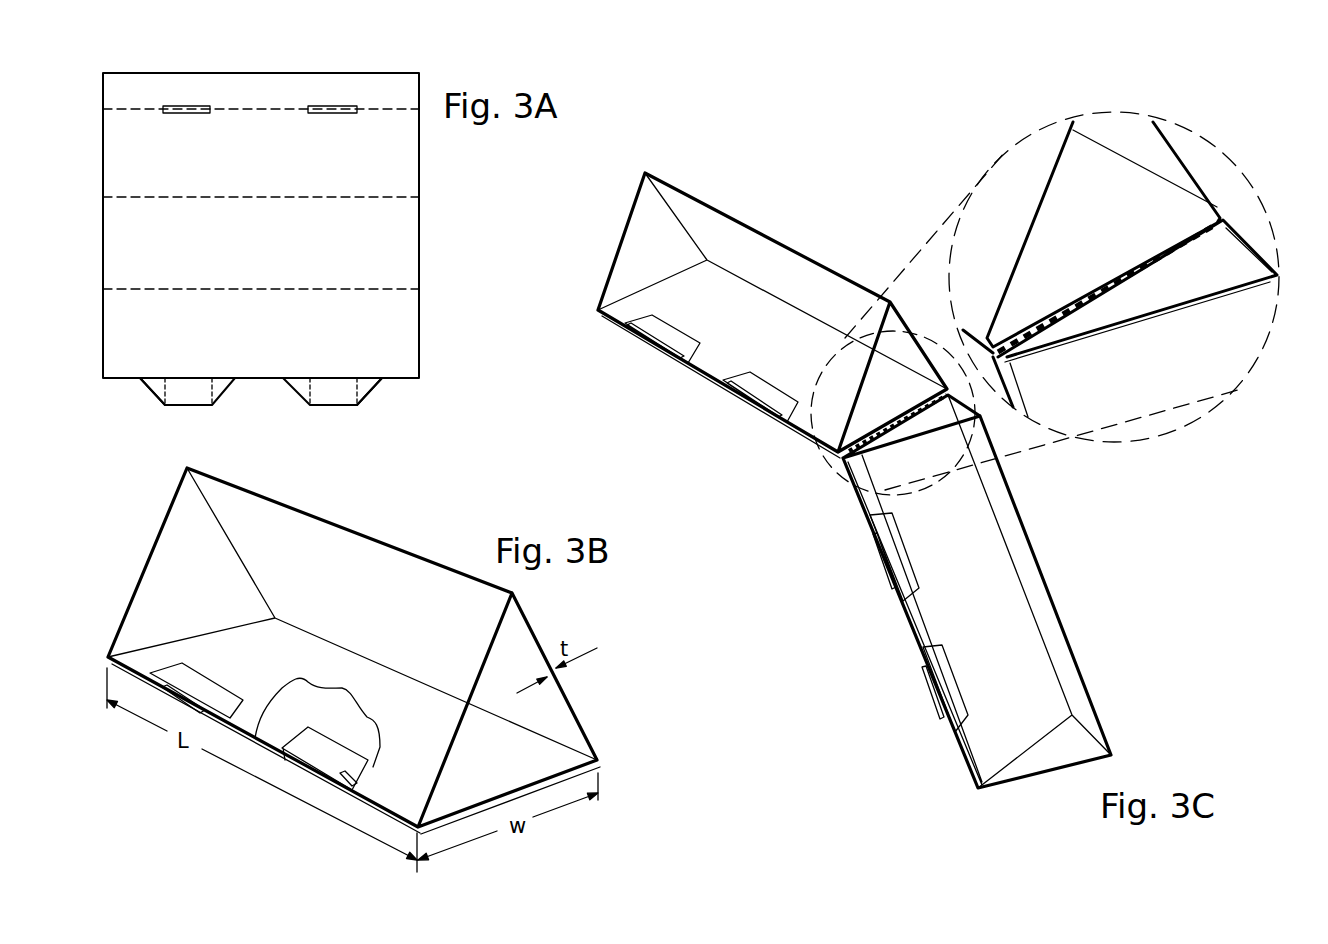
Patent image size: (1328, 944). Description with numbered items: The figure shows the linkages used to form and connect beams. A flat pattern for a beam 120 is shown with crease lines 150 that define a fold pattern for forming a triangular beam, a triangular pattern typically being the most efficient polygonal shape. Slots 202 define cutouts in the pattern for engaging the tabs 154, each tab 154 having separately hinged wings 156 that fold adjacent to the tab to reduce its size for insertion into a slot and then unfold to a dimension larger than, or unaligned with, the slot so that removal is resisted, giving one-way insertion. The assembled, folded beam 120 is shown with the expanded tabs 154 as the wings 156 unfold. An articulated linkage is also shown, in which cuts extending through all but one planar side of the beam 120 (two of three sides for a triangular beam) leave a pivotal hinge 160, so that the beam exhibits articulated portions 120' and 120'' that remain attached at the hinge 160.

In FIG. 3A, the crease lines 150 is at (390, 109).
In FIG. 3A, the slots 202 is at (190, 113).
In FIG. 3A, the tab 154 is at (195, 407).
In FIG. 3B, the tab 154 is at (325, 757).
In FIG. 3A, the hinged wings 156 is at (152, 397).
In FIG. 3B, the hinged wings 156 is at (285, 757).
In FIG. 3B, the beam 120 is at (354, 651).
In FIG. 3C, the beam 120 is at (983, 350).
In FIG. 3C, the articulated portion 120' is at (772, 308).
In FIG. 3C, the articulated portion 120'' is at (1003, 591).
In FIG. 3C, the pivotal hinge 160 is at (1122, 267).